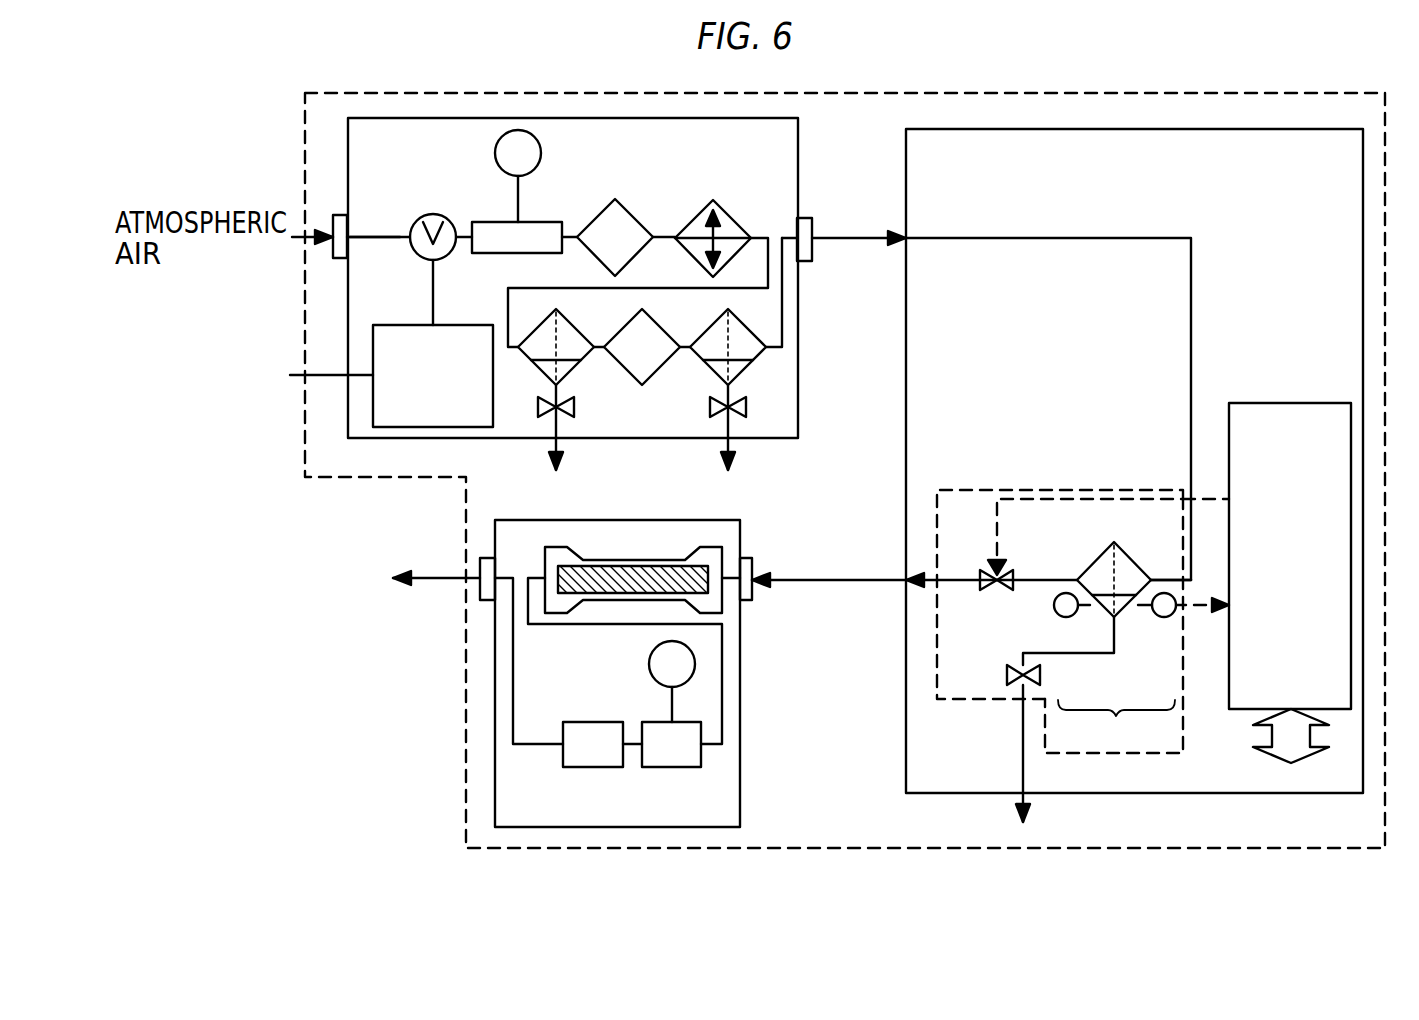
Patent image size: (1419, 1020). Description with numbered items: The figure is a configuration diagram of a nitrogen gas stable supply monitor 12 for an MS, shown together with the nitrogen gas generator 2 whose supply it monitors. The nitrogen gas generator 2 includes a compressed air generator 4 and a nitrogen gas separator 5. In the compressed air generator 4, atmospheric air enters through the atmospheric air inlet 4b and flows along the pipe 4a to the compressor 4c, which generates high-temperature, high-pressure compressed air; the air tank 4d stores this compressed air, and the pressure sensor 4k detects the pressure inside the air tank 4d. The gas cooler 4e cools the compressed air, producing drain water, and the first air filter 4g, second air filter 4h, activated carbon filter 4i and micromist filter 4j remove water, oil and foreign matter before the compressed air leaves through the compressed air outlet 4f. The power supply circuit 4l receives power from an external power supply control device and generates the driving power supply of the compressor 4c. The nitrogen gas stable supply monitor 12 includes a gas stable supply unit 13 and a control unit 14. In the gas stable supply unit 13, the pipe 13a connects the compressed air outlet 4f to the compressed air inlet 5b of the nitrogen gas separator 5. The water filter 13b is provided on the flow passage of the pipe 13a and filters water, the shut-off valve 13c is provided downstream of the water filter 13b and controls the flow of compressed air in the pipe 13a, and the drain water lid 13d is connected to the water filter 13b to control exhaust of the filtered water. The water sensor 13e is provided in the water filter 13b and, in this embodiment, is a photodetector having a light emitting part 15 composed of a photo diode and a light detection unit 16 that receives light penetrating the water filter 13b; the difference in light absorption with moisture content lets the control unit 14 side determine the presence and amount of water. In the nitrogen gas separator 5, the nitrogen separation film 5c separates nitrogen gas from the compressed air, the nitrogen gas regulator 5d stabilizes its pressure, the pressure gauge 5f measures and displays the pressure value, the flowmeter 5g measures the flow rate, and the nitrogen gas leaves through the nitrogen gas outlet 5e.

The nitrogen gas generator 2 is at (466, 715).
The compressed air generator 4 is at (798, 393).
The pipe 4a is at (387, 237).
The atmospheric air inlet 4b is at (340, 215).
The compressor 4c is at (425, 224).
The air tank 4d is at (548, 222).
The gas cooler 4e is at (733, 232).
The compressed air outlet 4f is at (804, 218).
The first air filter 4g is at (630, 223).
The second air filter 4h is at (535, 362).
The activated carbon filter 4i is at (628, 380).
The micromist filter 4j is at (708, 373).
The pressure sensor 4k is at (495, 153).
The power supply circuit 4l is at (409, 325).
The nitrogen gas separator 5 is at (674, 520).
The compressed air inlet 5b is at (747, 558).
The nitrogen separation film 5c is at (620, 560).
The nitrogen gas regulator 5d is at (678, 767).
The nitrogen gas outlet 5e is at (487, 558).
The pressure gauge 5f is at (649, 664).
The flowmeter 5g is at (596, 767).
The nitrogen gas stable supply monitor 12 is at (906, 310).
The gas stable supply unit 13 is at (965, 700).
The pipe 13a is at (1167, 579).
The water filter 13b is at (1090, 565).
The shut-off valve 13c is at (990, 566).
The drain water lid 13d is at (1014, 668).
The water sensor 13e is at (1113, 627).
The control unit 14 is at (1290, 403).
The light emitting part 15 is at (1066, 617).
The light detection unit 16 is at (1164, 617).